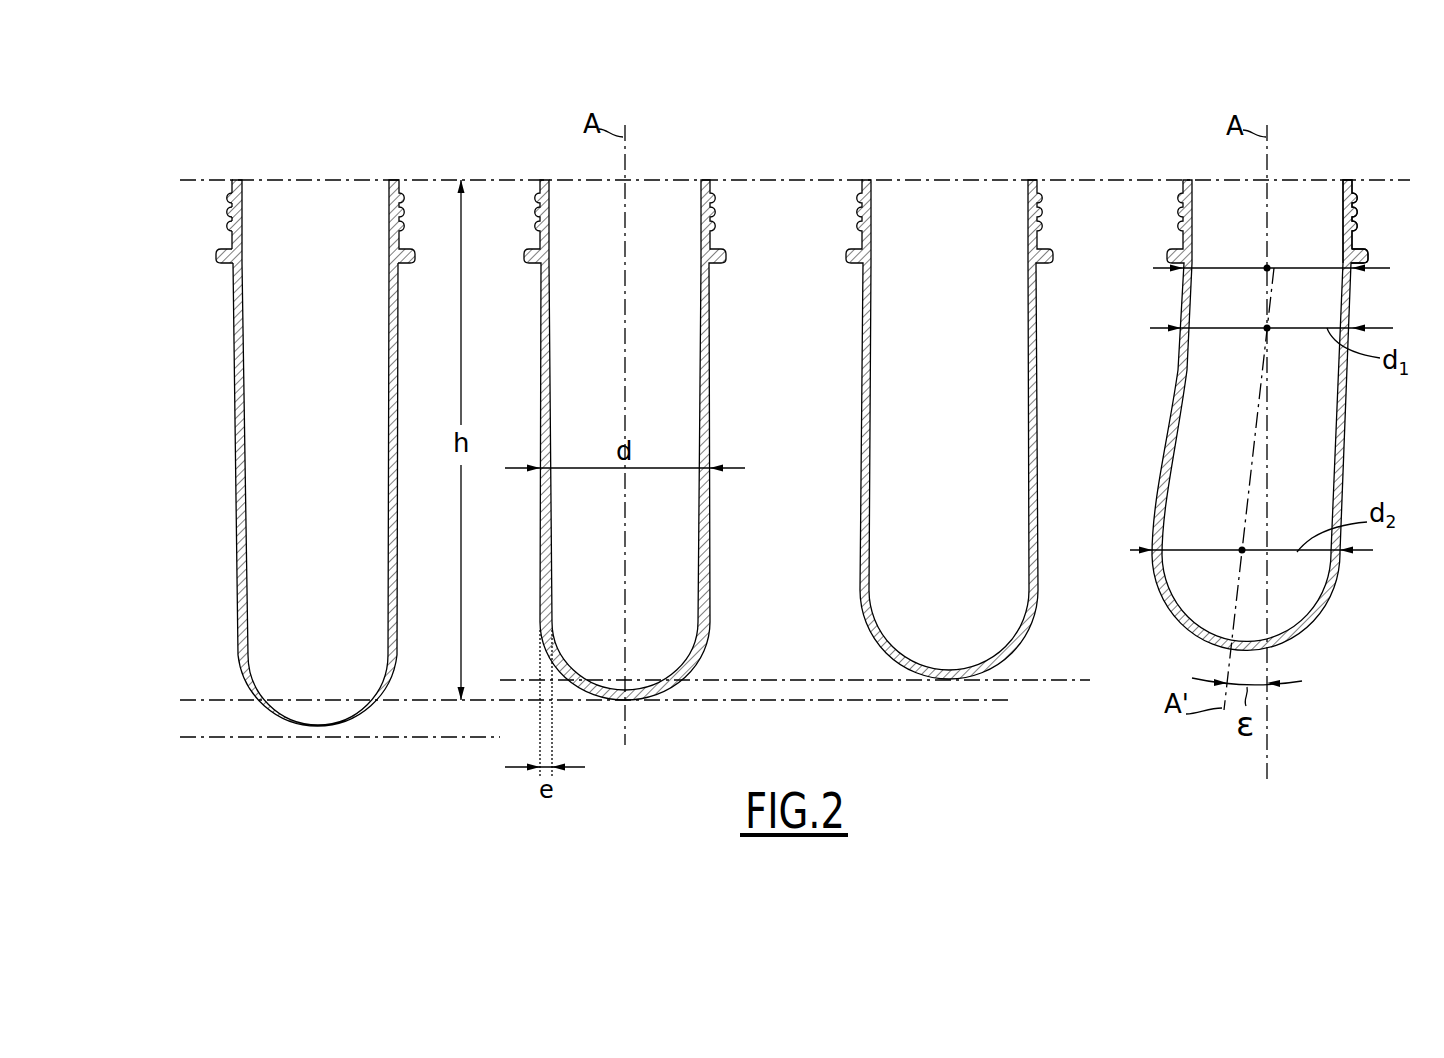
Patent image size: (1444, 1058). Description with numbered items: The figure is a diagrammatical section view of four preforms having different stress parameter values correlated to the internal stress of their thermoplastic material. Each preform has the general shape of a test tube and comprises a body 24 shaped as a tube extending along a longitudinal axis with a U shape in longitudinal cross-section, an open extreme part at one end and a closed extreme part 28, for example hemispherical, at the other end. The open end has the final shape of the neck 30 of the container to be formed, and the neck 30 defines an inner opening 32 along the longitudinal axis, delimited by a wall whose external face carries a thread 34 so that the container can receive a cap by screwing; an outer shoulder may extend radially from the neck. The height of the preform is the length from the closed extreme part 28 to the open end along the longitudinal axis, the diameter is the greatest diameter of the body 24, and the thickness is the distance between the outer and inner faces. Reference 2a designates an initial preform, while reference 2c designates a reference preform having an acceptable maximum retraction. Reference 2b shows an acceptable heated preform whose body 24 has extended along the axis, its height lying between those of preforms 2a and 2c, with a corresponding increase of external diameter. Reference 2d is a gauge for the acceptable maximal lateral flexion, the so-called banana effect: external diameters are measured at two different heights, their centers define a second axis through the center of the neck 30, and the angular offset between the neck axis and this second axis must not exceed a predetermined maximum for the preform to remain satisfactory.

The initial preform 2a is at (277, 456).
The heated preform (acceptable) 2b is at (731, 528).
The reference preform 2c is at (1061, 594).
The gauge 2d is at (1293, 379).
The body 24 is at (238, 400).
The closed extreme part 28 is at (318, 740).
The neck 30 is at (218, 209).
The inner opening 32 is at (326, 190).
The thread 34 is at (227, 228).